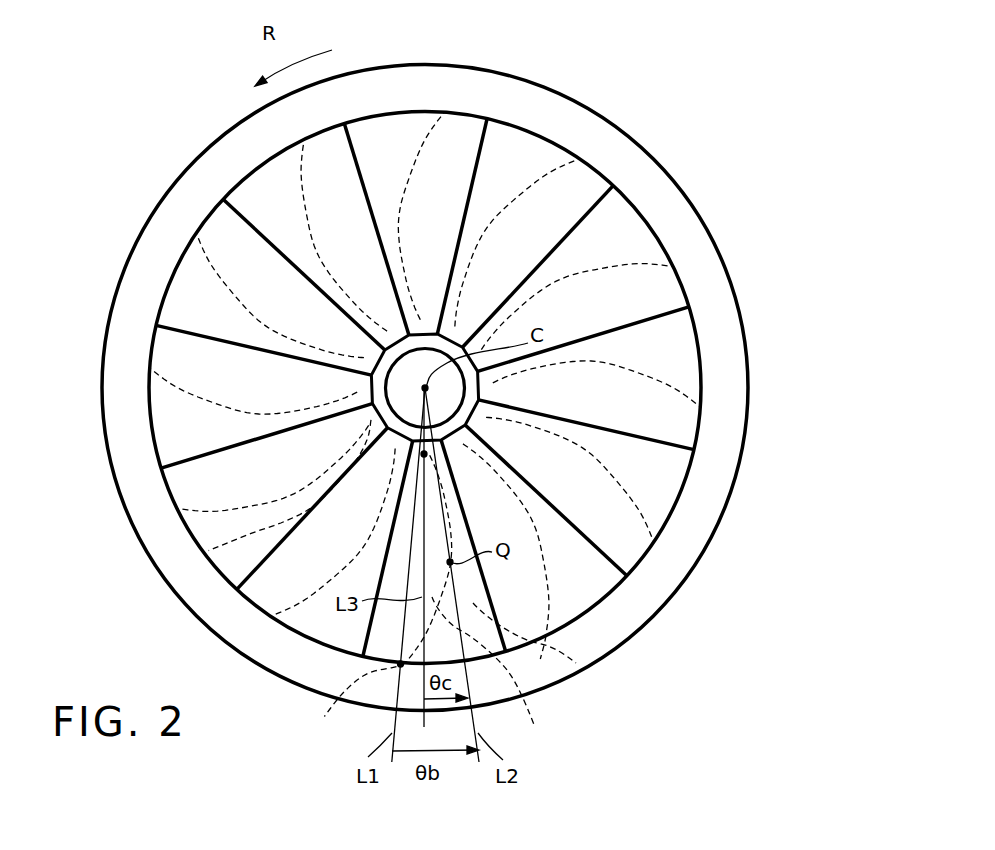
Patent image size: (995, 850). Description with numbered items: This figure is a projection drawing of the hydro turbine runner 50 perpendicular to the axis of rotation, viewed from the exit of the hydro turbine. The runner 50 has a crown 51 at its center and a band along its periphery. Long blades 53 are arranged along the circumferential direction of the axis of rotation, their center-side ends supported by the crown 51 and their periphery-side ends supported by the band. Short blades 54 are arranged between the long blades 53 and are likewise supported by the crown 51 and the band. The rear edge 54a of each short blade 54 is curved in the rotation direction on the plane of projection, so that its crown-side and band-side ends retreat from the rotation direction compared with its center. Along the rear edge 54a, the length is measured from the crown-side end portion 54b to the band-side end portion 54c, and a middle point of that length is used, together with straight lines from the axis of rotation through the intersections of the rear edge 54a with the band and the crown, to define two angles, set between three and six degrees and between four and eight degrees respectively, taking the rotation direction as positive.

The hydro turbine runner 50 is at (654, 158).
The crown 51 is at (378, 424).
The long blade 53 is at (518, 583).
The short blade 54 is at (578, 664).
The rear edge 54a is at (517, 697).
The crown-side end portion 54b is at (208, 551).
The band-side end portion 54c is at (398, 668).